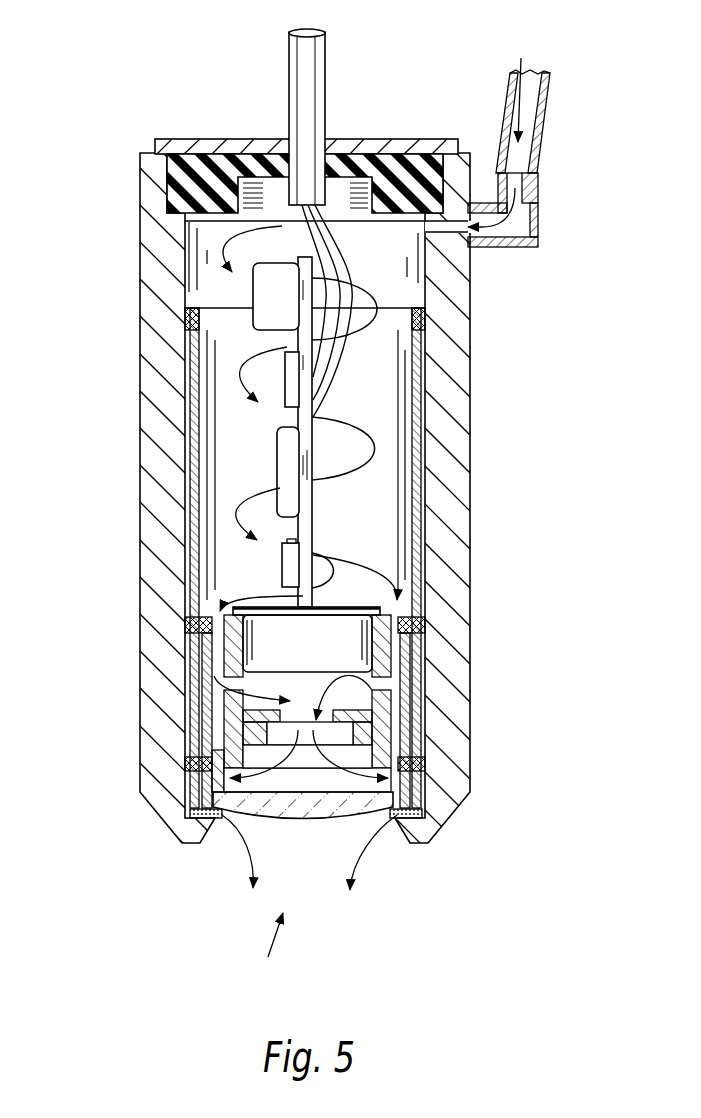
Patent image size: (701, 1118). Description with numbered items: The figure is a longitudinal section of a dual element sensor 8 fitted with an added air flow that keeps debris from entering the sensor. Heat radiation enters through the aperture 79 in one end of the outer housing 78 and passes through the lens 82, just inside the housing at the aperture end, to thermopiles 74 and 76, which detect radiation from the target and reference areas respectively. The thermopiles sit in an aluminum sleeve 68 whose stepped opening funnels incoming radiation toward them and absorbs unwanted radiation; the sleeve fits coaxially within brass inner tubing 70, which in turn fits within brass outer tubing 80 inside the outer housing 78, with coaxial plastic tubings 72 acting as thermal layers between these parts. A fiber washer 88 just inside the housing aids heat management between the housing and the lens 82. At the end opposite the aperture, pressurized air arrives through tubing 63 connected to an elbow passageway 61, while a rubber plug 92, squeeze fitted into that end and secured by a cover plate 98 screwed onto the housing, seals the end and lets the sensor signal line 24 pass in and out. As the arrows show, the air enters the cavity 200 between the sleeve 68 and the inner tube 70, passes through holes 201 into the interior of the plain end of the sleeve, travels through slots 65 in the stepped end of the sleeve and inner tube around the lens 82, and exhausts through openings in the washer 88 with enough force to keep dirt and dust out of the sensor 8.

The dual element sensor 8 is at (518, 342).
The sensor signal line 24 is at (323, 85).
The elbow passageway 61 is at (538, 225).
The tubing 63 is at (540, 143).
The slots 65 is at (210, 780).
The aluminum sleeve 68 is at (385, 730).
The inner tubing 70 is at (415, 655).
The plastic tubings 72 is at (185, 318).
The thermopile 74 is at (291, 650).
The thermopile 76 is at (331, 642).
The outer housing 78 is at (458, 505).
The aperture 79 is at (269, 948).
The outer tubing 80 is at (417, 463).
The lens 82 is at (313, 814).
The fiber washer 88 is at (200, 820).
The rubber plug 92 is at (190, 177).
The cover plate 98 is at (218, 139).
The cavity 200 is at (190, 593).
The holes 201 is at (230, 688).